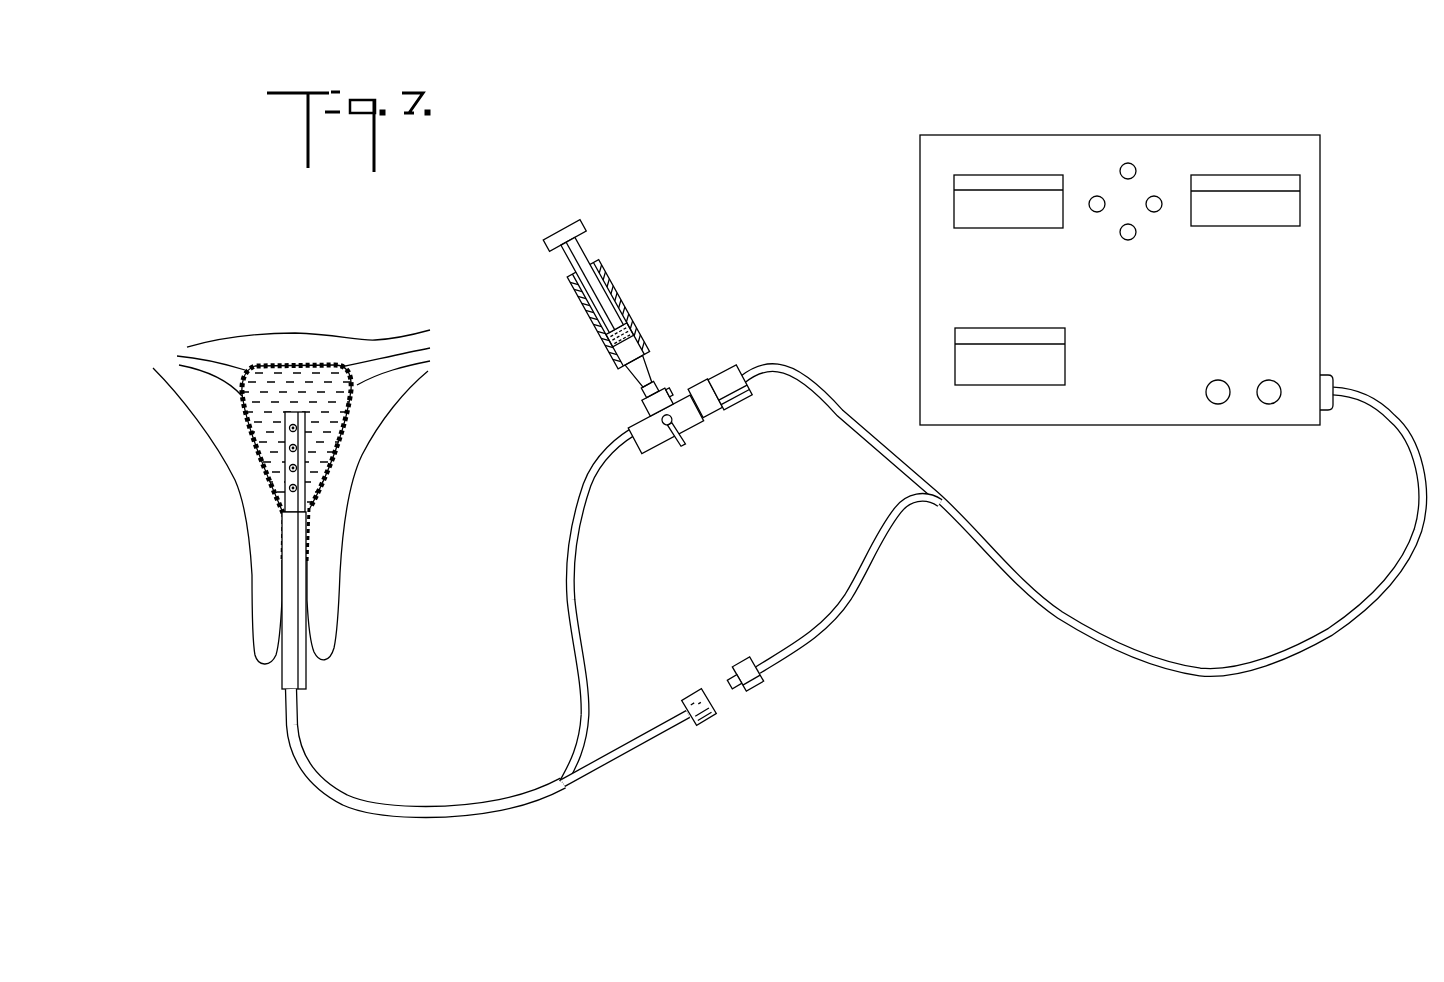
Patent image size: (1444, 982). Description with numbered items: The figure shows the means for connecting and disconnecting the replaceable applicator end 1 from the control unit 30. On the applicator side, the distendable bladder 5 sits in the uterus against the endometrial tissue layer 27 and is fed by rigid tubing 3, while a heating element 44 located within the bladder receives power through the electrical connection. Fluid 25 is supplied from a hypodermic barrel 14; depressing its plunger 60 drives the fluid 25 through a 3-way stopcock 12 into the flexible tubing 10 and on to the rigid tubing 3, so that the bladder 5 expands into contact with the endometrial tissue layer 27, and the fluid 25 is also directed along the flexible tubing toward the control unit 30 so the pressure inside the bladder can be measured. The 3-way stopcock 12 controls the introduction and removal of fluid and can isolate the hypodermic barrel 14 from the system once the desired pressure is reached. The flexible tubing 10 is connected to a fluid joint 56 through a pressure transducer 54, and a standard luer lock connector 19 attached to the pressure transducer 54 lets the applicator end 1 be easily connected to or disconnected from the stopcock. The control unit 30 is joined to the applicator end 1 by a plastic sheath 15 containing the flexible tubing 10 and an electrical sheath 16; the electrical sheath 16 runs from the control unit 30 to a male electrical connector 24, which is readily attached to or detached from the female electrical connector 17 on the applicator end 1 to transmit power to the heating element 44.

The applicator end 1 is at (307, 717).
The rigid tubing 3 is at (298, 600).
The distendable bladder 5 is at (352, 400).
The flexible tubing 10 is at (541, 795).
The 3-way stopcock 12 is at (648, 437).
The hypodermic barrel 14 is at (615, 291).
The plastic sheath 15 is at (1059, 615).
The electrical sheath 16 is at (832, 630).
The female electrical connector 17 is at (720, 713).
The luer lock connector 19 is at (740, 405).
The male electrical connector 24 is at (766, 683).
The fluid 25 is at (323, 422).
The endometrial tissue layer 27 is at (318, 468).
The control unit 30 is at (1177, 148).
The heating element 44 is at (280, 456).
The pressure transducer 54 is at (706, 383).
The fluid joint 56 is at (740, 362).
The plunger 60 is at (583, 231).